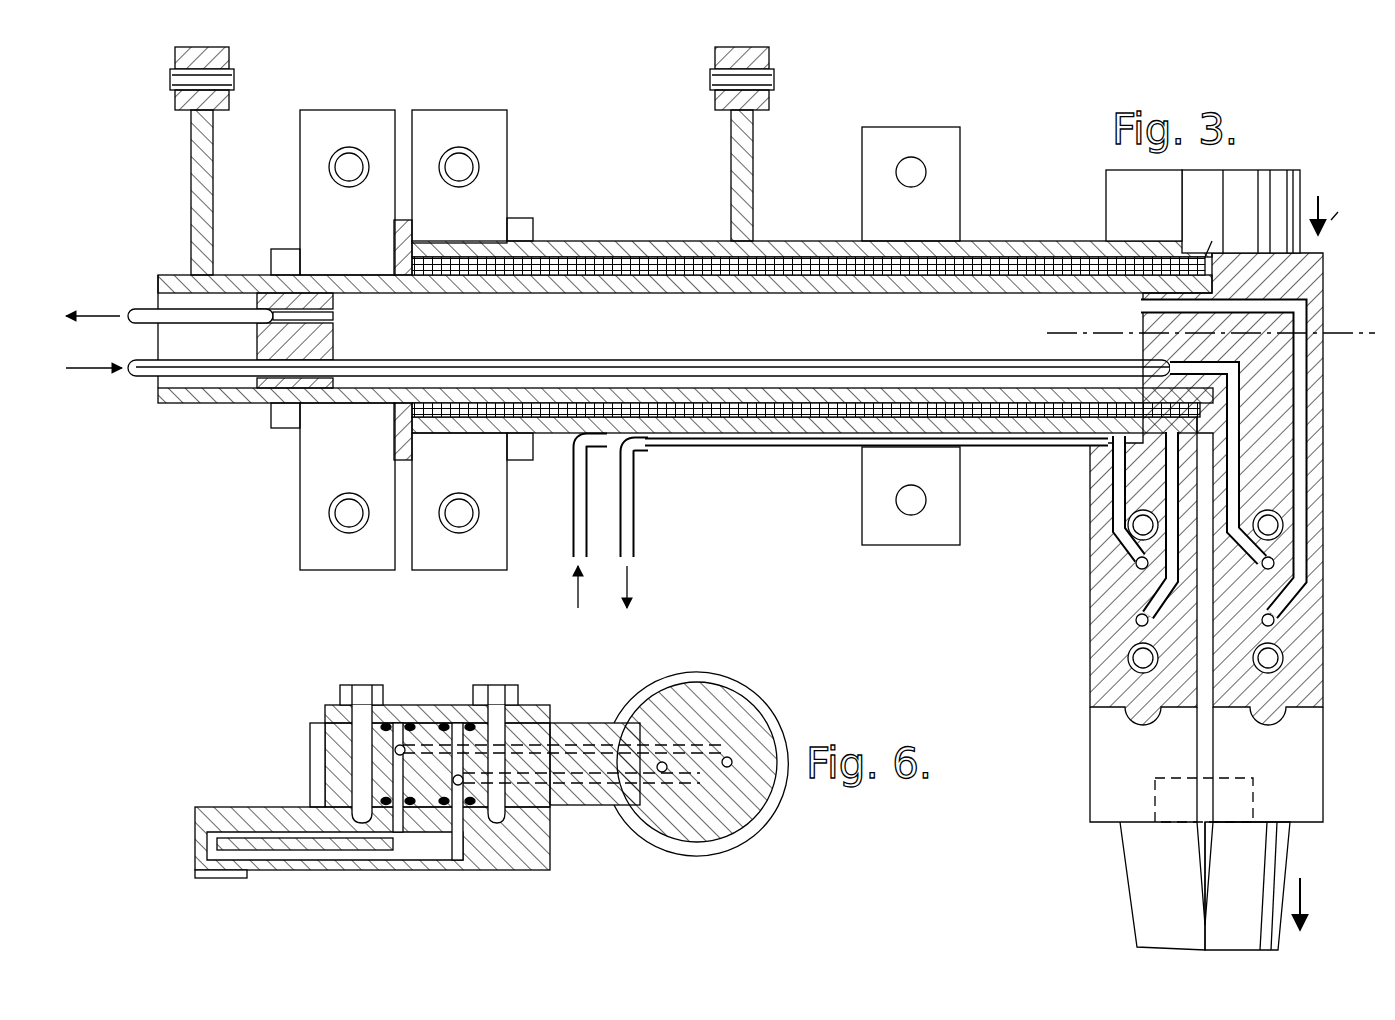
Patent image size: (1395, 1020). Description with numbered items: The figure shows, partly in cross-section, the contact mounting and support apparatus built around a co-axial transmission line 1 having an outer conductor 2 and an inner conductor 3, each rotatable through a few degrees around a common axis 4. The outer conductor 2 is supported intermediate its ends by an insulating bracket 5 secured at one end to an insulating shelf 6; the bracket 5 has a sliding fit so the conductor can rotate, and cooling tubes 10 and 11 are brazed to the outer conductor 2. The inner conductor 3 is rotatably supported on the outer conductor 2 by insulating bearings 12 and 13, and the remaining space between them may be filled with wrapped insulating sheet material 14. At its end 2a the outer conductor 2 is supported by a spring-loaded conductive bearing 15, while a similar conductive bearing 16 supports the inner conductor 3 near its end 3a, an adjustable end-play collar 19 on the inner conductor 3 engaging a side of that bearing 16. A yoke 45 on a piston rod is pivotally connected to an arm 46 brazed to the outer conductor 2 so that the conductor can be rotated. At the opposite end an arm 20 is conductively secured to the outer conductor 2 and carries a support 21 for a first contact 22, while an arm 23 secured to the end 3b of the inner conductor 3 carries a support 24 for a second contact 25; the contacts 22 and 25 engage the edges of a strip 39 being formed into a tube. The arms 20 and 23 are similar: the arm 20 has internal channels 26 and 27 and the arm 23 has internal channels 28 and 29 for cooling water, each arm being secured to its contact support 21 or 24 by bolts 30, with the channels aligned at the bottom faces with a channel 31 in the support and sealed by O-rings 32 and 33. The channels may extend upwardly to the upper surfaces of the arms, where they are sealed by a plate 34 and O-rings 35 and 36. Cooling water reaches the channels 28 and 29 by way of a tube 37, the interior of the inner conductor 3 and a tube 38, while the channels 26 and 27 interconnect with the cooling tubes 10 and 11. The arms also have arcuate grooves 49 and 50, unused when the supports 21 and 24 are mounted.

In FIG. 3, the co-axial transmission line 1 is at (636, 220).
In FIG. 3, the outer conductor 2 is at (795, 247).
In FIG. 3, the end of outer conductor 2a is at (456, 249).
In FIG. 3, the inner conductor 3 is at (678, 272).
In FIG. 3, the end of inner conductor 3a is at (166, 272).
In FIG. 3, the end of inner conductor 3b is at (1212, 390).
In FIG. 3, the common axis 4 is at (1345, 333).
In FIG. 3, the bracket 5 is at (960, 490).
In FIG. 3, the shelf 6 is at (1268, 214).
In FIG. 3, the cooling tube 10 is at (573, 525).
In FIG. 3, the cooling tube 11 is at (636, 518).
In FIG. 3, the bearing 12 is at (410, 226).
In FIG. 3, the bearing 13 is at (1206, 241).
In FIG. 3, the wrapped insulating sheet material 14 is at (723, 420).
In FIG. 3, the conductive bearing 15 is at (507, 154).
In FIG. 3, the conductive bearing 16 is at (300, 163).
In FIG. 3, the end-play collar 19 is at (279, 252).
In FIG. 3, the arm 20 is at (1100, 657).
In FIG. 3, the support 21 is at (1095, 752).
In FIG. 3, the first contact 22 is at (1184, 818).
In FIG. 3, the arm 23 is at (1315, 641).
In FIG. 6, the arm 23 is at (310, 766).
In FIG. 3, the support 24 is at (1320, 768).
In FIG. 6, the support 24 is at (222, 812).
In FIG. 3, the second contact 25 is at (1228, 808).
In FIG. 6, the second contact 25 is at (218, 880).
In FIG. 3, the internal channel 26 is at (1080, 504).
In FIG. 3, the internal channel 27 is at (1175, 488).
In FIG. 3, the internal channel 28 is at (1302, 479).
In FIG. 6, the internal channel 28 is at (576, 745).
In FIG. 3, the internal channel 29 is at (1240, 452).
In FIG. 6, the internal channel 29 is at (581, 805).
In FIG. 6, the bolt 30 is at (365, 685).
In FIG. 6, the channel 31 is at (446, 857).
In FIG. 6, the O-ring 32 is at (418, 777).
In FIG. 6, the O-ring 33 is at (436, 791).
In FIG. 6, the plate 34 is at (549, 705).
In FIG. 6, the O-ring 35 is at (409, 722).
In FIG. 6, the O-ring 36 is at (442, 722).
In FIG. 3, the tube 37 is at (137, 307).
In FIG. 3, the tube 38 is at (136, 379).
In FIG. 3, the strip 39 is at (1300, 179).
In FIG. 3, the yoke 45 is at (769, 105).
In FIG. 3, the arm 46 is at (753, 170).
In FIG. 3, the arcuate groove 49 is at (1150, 705).
In FIG. 3, the arcuate groove 50 is at (1275, 705).